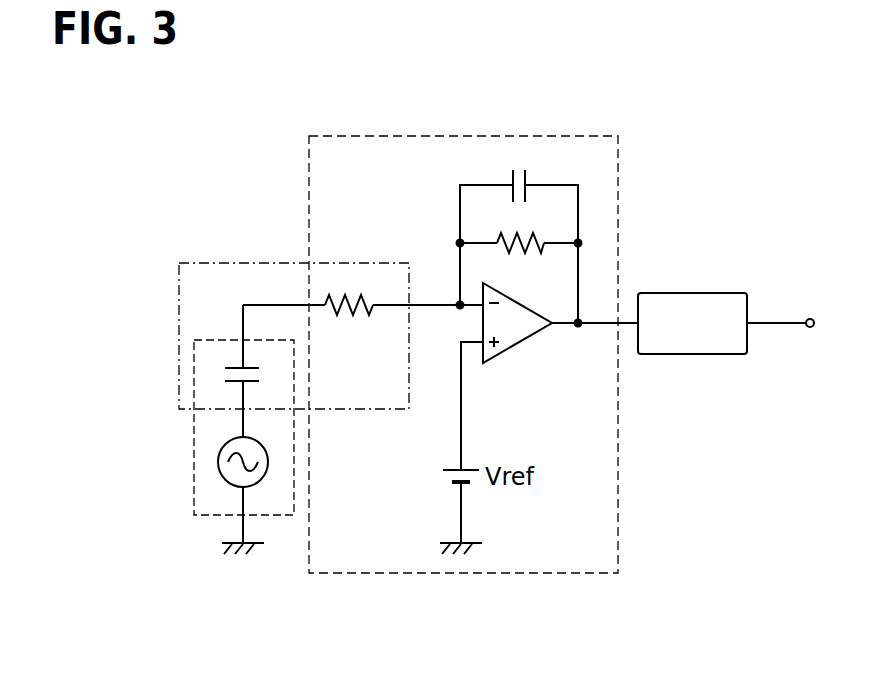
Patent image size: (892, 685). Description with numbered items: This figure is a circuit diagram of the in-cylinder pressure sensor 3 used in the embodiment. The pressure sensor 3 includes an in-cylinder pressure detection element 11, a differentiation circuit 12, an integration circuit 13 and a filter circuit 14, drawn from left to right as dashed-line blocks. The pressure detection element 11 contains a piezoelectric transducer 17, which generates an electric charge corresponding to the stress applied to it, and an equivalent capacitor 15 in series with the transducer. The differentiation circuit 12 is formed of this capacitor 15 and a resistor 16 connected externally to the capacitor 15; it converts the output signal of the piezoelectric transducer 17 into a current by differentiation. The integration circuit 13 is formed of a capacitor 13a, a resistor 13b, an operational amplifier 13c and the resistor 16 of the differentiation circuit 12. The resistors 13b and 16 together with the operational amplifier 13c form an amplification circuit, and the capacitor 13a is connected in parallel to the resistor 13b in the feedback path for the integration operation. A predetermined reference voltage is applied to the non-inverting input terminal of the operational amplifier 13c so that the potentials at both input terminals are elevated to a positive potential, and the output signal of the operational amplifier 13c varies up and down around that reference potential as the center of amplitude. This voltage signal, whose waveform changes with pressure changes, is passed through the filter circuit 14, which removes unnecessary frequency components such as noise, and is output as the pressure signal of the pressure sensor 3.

The pressure sensor 3 is at (224, 130).
The in-cylinder pressure detection element 11 is at (192, 455).
The differentiation circuit 12 is at (233, 262).
The integration circuit 13 is at (619, 170).
The capacitor 13a is at (528, 176).
The resistor 13b is at (503, 237).
The operational amplifier 13c is at (520, 344).
The filter circuit 14 is at (690, 292).
The equivalent capacitor 15 is at (228, 368).
The resistor 16 is at (338, 298).
The piezoelectric transducer 17 is at (268, 466).